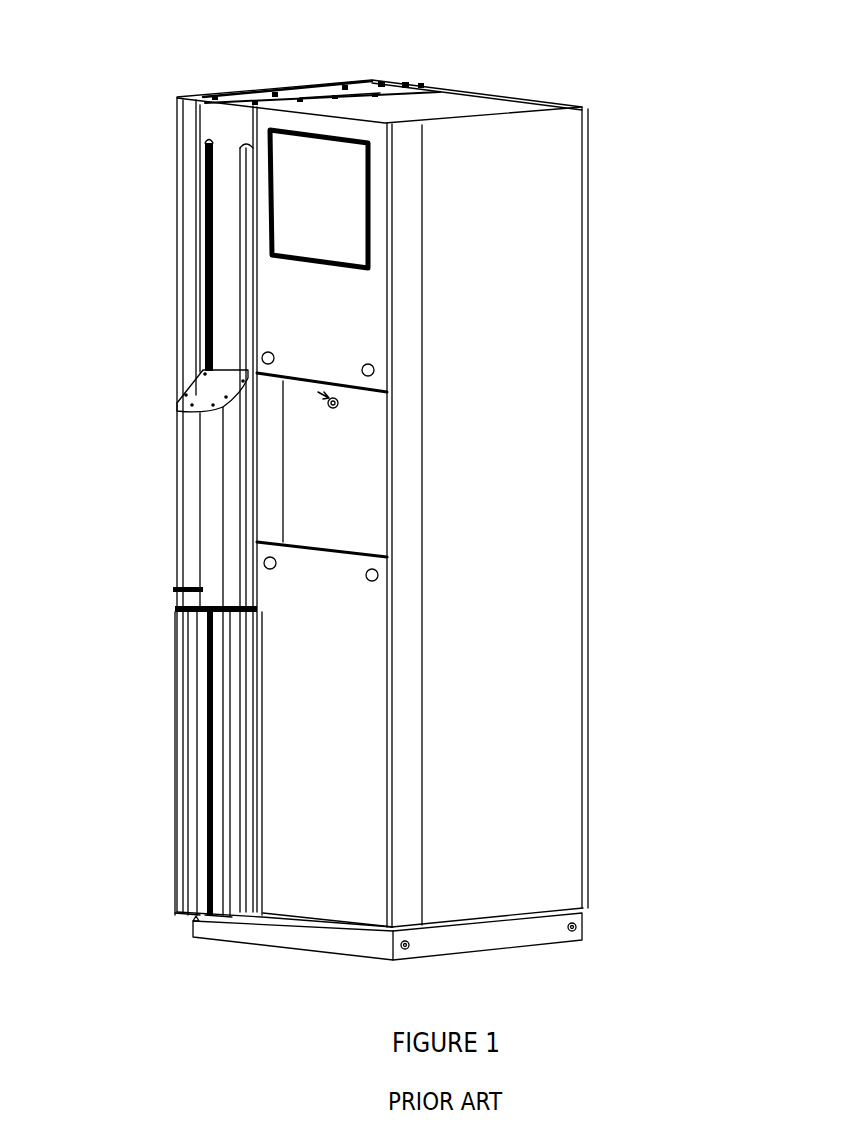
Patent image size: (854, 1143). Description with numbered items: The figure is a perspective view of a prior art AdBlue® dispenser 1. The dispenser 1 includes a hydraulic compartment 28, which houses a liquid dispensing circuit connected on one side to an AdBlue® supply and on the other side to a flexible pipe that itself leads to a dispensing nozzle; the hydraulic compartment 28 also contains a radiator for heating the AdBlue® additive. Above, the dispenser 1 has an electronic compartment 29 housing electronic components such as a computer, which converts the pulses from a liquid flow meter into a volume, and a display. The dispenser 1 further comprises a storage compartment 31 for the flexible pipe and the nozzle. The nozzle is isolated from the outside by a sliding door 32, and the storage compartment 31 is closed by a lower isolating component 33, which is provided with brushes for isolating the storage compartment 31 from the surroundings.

The AdBlue® dispenser 1 is at (583, 125).
The hydraulic compartment 28 is at (308, 905).
The electronic compartment 29 is at (463, 103).
The storage compartment 31 is at (180, 243).
The sliding door 32 is at (178, 467).
The lower isolating component 33 is at (180, 722).